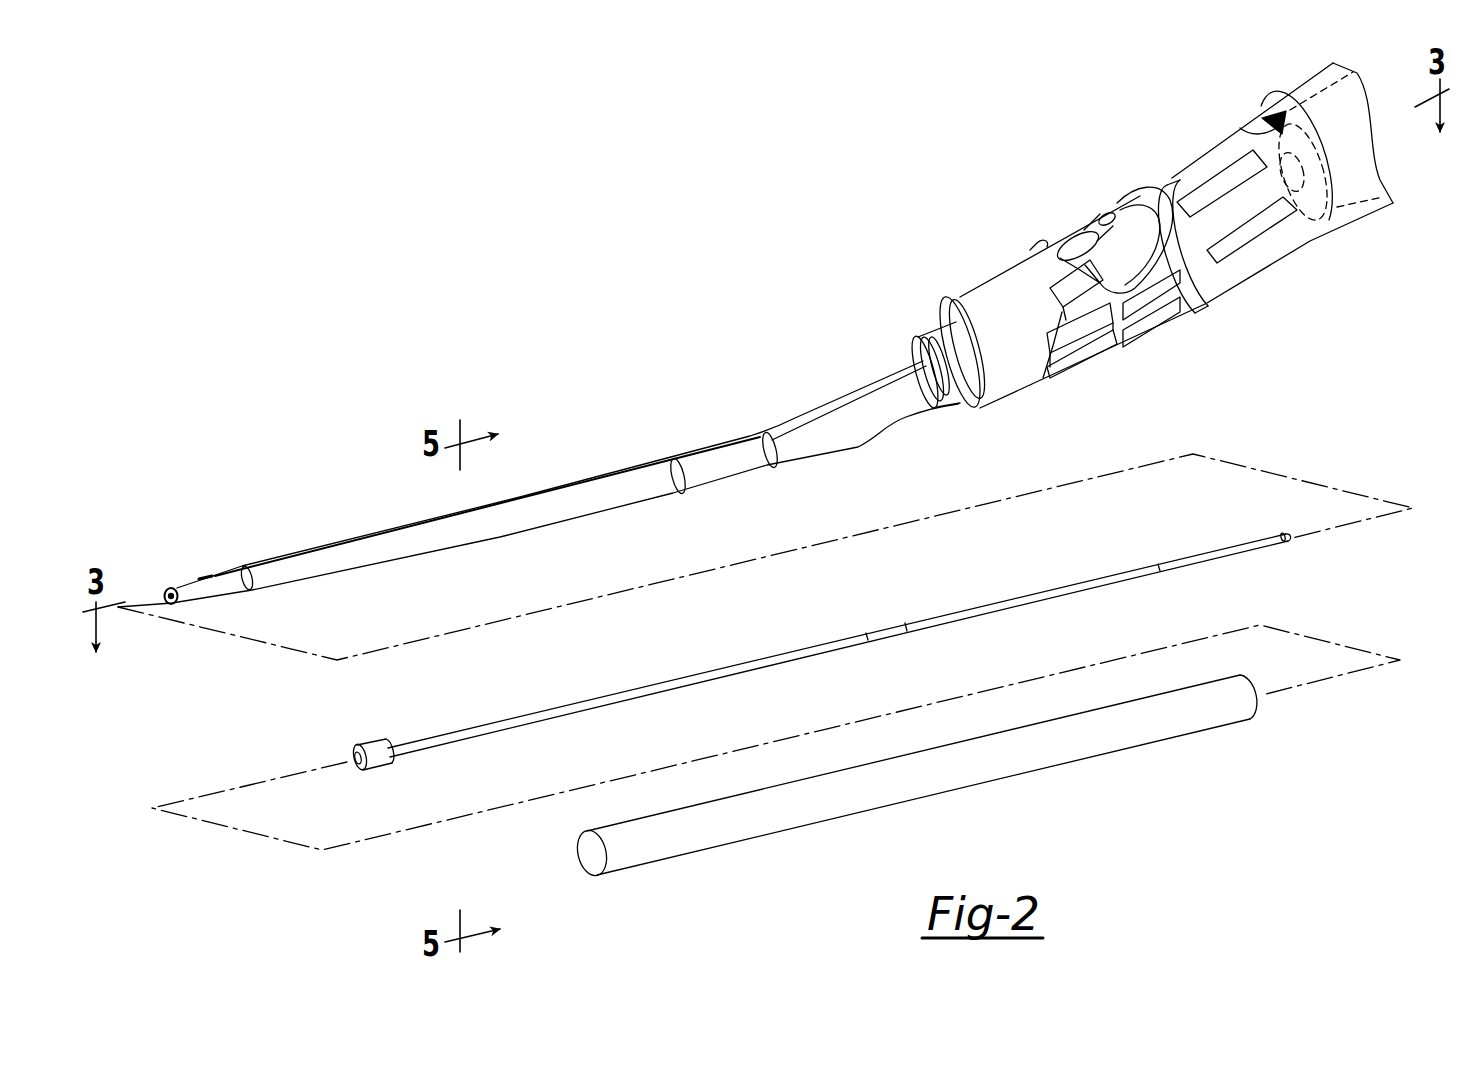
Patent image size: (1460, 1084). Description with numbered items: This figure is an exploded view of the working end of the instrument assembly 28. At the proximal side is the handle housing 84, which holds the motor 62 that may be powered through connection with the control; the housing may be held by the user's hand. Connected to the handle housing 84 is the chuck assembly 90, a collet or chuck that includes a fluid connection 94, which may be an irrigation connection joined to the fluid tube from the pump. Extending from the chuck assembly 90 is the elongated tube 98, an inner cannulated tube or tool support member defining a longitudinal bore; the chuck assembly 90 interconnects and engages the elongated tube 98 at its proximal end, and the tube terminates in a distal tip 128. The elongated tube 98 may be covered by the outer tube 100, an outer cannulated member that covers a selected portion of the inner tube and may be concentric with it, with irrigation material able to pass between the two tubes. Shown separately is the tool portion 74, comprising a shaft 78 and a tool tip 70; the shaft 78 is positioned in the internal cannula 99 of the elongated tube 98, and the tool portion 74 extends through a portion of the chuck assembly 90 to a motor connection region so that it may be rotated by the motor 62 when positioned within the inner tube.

The instrument assembly 28 is at (852, 160).
The motor 62 is at (1382, 203).
The tool tip 70 is at (360, 752).
The tool portion 74 is at (990, 578).
The shaft 78 is at (686, 680).
The handle housing 84 is at (1305, 80).
The chuck assembly 90 is at (1237, 300).
The fluid connection 94 is at (1090, 230).
The elongated tube 98 is at (845, 448).
The internal cannula 99 is at (165, 597).
The outer tube 100 is at (1140, 724).
The distal tip 128 is at (175, 591).